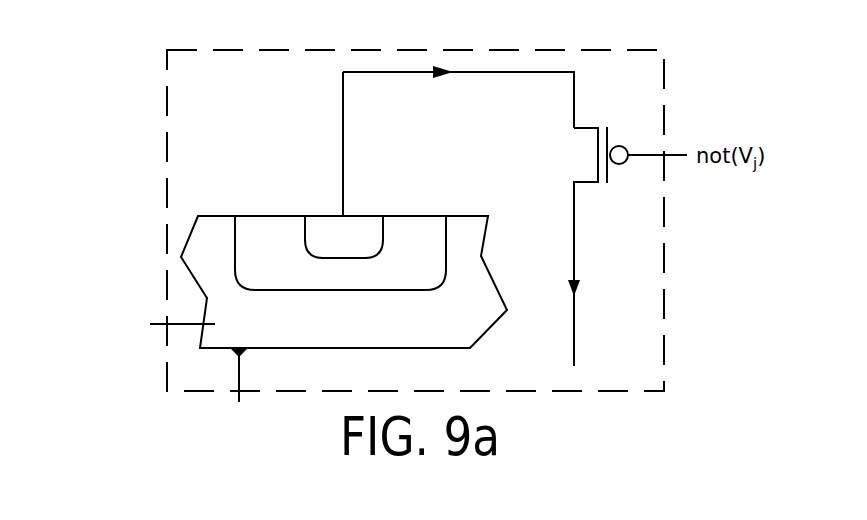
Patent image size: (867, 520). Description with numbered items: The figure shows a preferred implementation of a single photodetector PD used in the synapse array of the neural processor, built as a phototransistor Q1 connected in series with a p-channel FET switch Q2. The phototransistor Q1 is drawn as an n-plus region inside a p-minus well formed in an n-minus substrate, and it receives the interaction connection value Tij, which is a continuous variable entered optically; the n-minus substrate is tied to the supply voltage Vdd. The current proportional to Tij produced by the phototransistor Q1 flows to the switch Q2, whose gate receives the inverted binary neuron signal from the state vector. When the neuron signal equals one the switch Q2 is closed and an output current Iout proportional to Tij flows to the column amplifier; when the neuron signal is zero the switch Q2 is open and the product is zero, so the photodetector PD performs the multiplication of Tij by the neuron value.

The phototransistor Q1 is at (344, 210).
The p-channel FET switch Q2 is at (616, 246).
The interaction connection value Tij is at (318, 201).
The output current Iout is at (633, 312).
The photodetector PD is at (160, 202).
The supply voltage Vdd is at (183, 371).